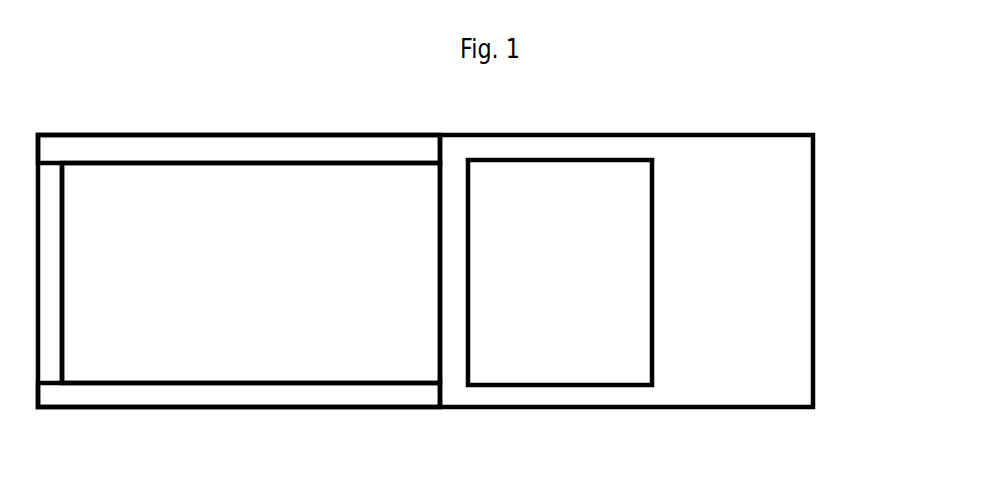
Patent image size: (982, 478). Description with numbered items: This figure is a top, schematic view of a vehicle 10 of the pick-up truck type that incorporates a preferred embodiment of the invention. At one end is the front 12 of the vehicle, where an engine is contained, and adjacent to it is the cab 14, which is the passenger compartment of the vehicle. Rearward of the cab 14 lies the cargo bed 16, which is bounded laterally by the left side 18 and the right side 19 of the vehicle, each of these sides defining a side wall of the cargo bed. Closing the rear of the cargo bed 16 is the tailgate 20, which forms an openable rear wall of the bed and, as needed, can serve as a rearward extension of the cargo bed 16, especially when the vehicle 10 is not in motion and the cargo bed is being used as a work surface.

The vehicle 10 is at (623, 105).
The front of vehicle 12 is at (758, 187).
The cab 14 is at (569, 277).
The cargo bed 16 is at (303, 259).
The left side 18 is at (153, 149).
The right side 19 is at (192, 396).
The tailgate 20 is at (50, 270).